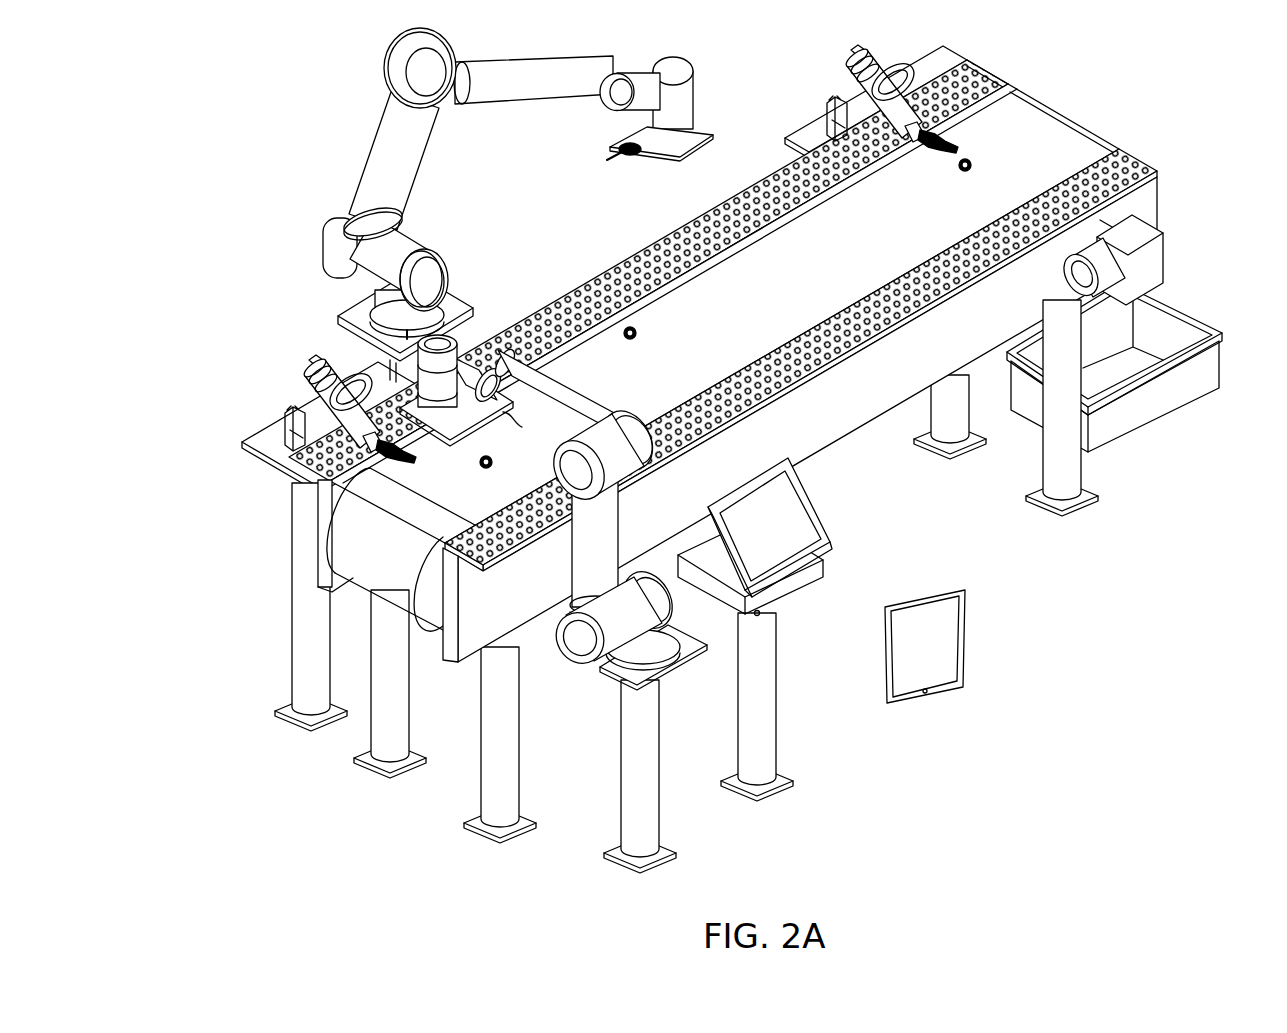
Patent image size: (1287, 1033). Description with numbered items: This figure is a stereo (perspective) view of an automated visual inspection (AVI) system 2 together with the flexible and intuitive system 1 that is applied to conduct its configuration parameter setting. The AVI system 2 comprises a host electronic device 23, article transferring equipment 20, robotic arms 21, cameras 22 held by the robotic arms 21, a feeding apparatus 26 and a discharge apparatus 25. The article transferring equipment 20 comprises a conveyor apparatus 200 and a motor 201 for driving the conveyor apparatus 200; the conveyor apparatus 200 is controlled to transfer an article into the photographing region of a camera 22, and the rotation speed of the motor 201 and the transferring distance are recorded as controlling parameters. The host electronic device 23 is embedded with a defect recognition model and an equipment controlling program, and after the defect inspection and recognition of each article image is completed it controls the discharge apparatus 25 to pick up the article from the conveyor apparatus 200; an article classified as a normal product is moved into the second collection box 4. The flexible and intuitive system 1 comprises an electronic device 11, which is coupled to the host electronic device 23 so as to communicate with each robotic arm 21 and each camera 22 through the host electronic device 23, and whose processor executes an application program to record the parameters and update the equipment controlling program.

The flexible and intuitive system 1 is at (733, 450).
The automated visual inspection (AVI) system 2 is at (692, 450).
The second collection box 4 is at (1207, 368).
The electronic device 11 is at (950, 630).
The article transferring equipment 20 is at (699, 308).
The conveyor apparatus 200 is at (683, 287).
The motor 201 is at (1153, 257).
The robotic arm 21 is at (380, 143).
The camera 22 is at (447, 420).
The host electronic device 23 is at (833, 510).
The discharge apparatus 25 is at (831, 97).
The feeding apparatus 26 is at (308, 368).